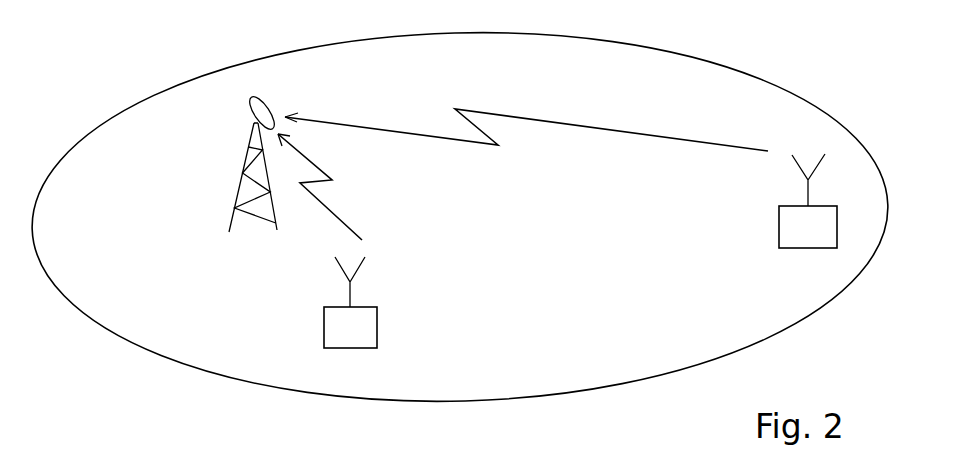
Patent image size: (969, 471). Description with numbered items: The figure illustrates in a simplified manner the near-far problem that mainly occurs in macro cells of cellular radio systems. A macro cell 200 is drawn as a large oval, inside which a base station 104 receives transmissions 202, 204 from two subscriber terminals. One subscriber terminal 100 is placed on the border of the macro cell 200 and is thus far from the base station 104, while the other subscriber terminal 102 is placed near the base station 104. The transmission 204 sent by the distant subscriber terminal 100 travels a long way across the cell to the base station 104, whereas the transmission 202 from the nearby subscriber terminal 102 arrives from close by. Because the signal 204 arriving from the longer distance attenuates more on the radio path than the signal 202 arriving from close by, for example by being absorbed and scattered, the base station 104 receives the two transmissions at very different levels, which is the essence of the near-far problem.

The macro cell 200 is at (508, 399).
The base station 104 is at (235, 200).
The subscriber terminal 100 is at (778, 217).
The subscriber terminal 102 is at (377, 318).
The transmission 204 is at (623, 135).
The transmission 202 is at (345, 223).